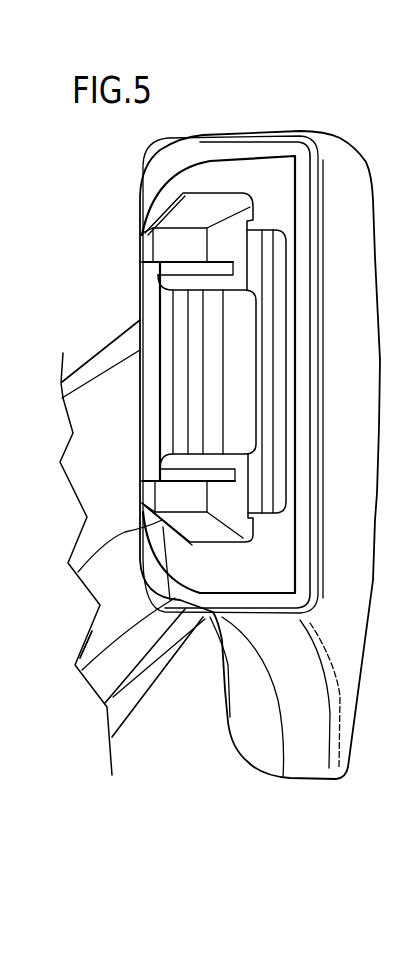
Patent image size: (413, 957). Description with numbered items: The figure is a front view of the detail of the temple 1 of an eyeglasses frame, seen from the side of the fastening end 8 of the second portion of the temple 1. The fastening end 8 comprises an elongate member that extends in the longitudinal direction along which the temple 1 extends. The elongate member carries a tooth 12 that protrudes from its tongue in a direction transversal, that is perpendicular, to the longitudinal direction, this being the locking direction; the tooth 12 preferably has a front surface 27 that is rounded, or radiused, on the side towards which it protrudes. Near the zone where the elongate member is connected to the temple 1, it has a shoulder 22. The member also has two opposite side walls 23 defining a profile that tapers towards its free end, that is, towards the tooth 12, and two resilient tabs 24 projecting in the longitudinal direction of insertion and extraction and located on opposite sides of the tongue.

The temple 1 is at (80, 328).
The fastening end 8 is at (345, 371).
The tooth 12 is at (267, 393).
The shoulder 22 is at (270, 275).
The side walls 23 is at (208, 211).
The resilient tabs 24 is at (175, 213).
The front surface 27 is at (237, 328).